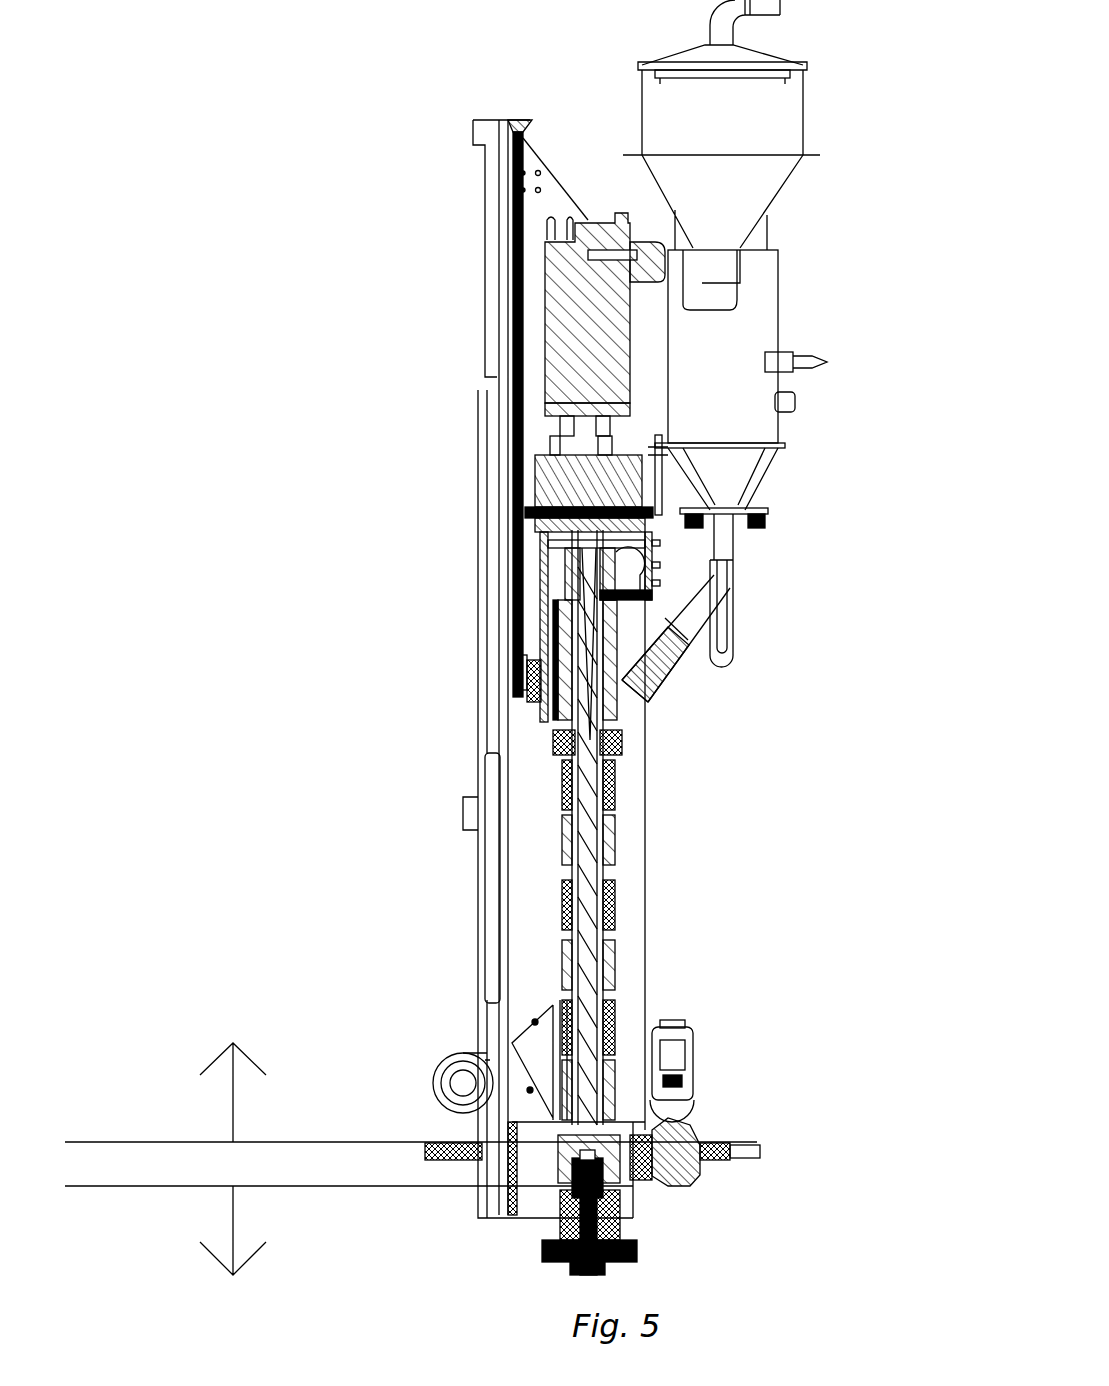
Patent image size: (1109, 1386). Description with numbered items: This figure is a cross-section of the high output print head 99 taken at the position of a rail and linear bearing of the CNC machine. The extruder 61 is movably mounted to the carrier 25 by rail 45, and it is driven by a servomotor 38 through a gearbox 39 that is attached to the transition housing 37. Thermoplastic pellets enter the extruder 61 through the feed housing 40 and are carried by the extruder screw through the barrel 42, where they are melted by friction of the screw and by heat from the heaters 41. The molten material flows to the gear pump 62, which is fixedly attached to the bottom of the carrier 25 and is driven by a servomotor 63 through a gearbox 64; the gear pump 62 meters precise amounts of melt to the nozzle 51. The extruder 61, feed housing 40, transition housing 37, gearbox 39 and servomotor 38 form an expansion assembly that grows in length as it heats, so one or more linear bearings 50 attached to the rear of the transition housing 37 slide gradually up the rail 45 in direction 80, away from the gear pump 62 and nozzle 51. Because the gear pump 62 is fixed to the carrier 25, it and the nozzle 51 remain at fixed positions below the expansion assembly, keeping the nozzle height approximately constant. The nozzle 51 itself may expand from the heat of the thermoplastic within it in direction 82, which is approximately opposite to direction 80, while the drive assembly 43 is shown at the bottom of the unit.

The carrier 25 is at (455, 235).
The transition housing 37 is at (545, 578).
The servomotor 38 is at (560, 323).
The gearbox 39 is at (563, 480).
The feed housing 40 is at (645, 612).
The heaters 41 is at (615, 960).
The barrel 42 is at (605, 873).
The drive assembly 43 is at (655, 1250).
The rail 45 is at (520, 617).
The linear bearing 50 is at (522, 672).
The nozzle 51 is at (600, 1255).
The extruder 61 is at (660, 745).
The gear pump 62 is at (557, 1162).
The servomotor 63 is at (693, 1055).
The gearbox 64 is at (683, 1185).
The direction 80 is at (234, 1092).
The direction 82 is at (234, 1230).
The print head 99 is at (910, 656).